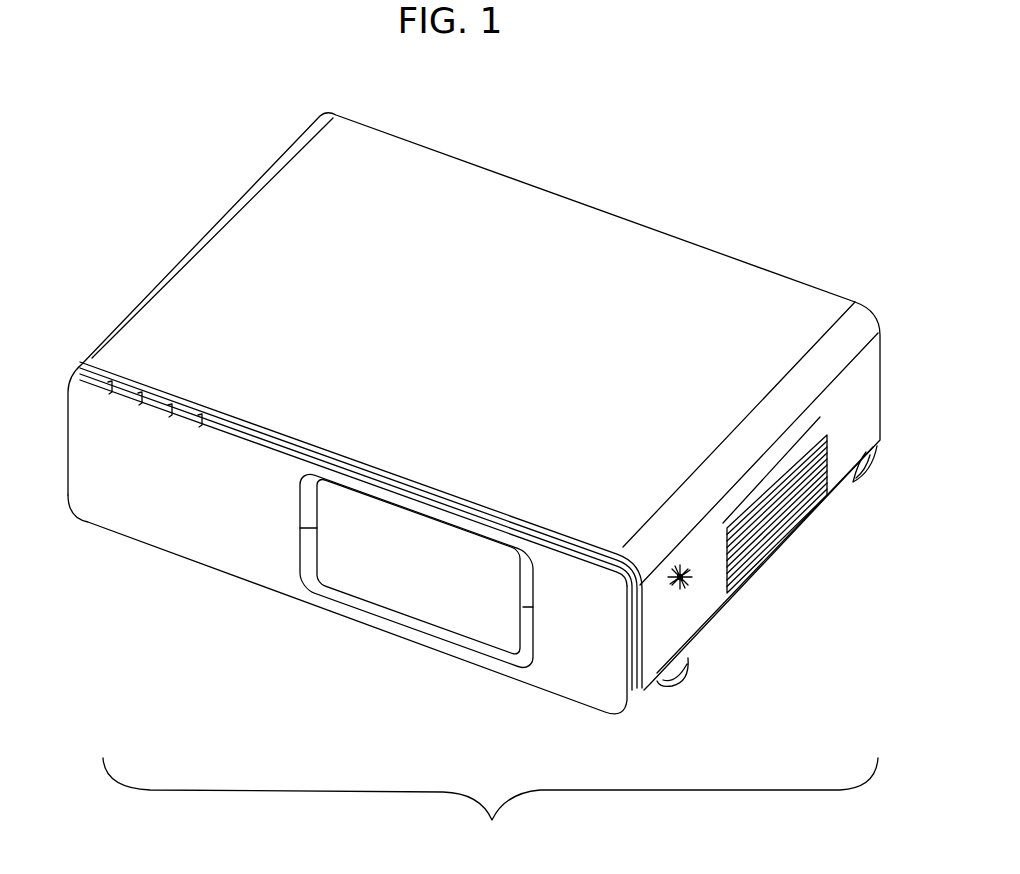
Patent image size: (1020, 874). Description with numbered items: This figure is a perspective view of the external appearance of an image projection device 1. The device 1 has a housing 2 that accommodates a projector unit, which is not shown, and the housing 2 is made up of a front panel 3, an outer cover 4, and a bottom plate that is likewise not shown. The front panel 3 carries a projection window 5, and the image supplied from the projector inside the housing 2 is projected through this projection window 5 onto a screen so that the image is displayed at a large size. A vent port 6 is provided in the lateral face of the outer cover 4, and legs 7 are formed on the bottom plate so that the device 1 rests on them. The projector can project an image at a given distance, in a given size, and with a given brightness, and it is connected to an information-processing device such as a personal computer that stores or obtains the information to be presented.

The device 1 is at (662, 222).
The housing 2 is at (480, 859).
The front panel 3 is at (232, 543).
The outer cover 4 is at (690, 610).
The projection window 5 is at (400, 600).
The vent port 6 is at (780, 520).
The legs 7 is at (683, 677).